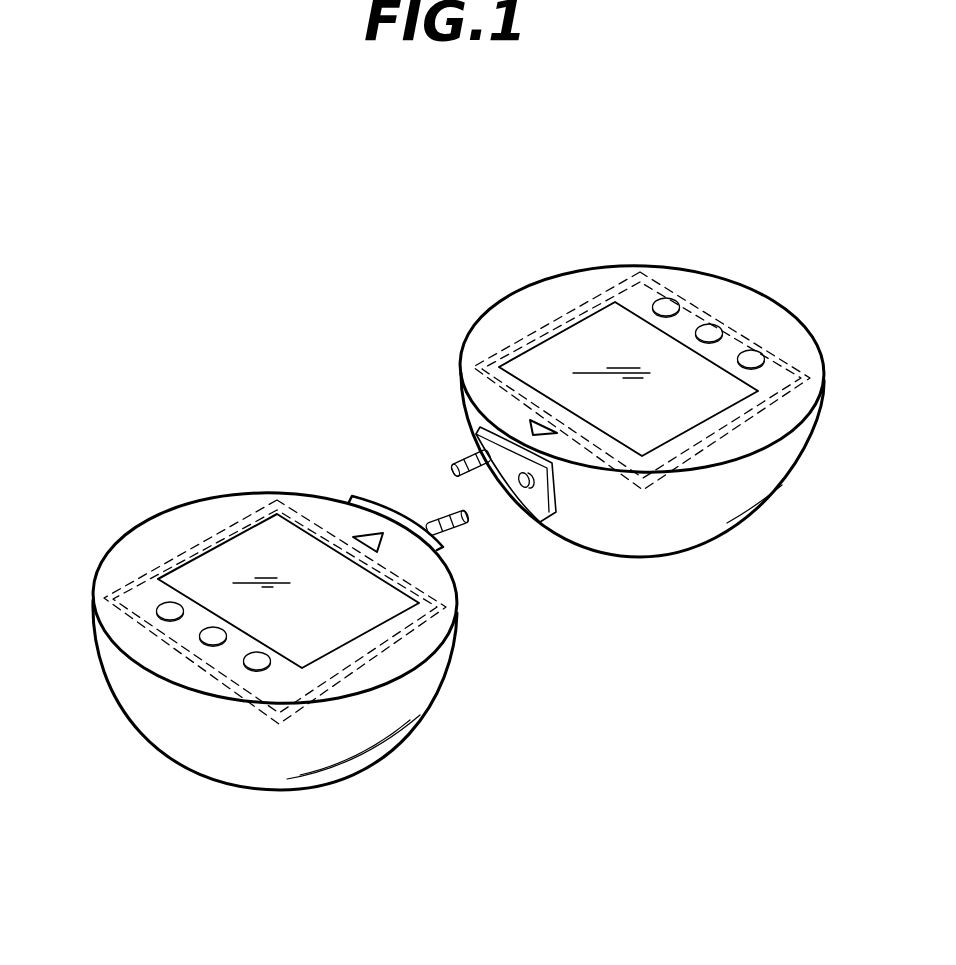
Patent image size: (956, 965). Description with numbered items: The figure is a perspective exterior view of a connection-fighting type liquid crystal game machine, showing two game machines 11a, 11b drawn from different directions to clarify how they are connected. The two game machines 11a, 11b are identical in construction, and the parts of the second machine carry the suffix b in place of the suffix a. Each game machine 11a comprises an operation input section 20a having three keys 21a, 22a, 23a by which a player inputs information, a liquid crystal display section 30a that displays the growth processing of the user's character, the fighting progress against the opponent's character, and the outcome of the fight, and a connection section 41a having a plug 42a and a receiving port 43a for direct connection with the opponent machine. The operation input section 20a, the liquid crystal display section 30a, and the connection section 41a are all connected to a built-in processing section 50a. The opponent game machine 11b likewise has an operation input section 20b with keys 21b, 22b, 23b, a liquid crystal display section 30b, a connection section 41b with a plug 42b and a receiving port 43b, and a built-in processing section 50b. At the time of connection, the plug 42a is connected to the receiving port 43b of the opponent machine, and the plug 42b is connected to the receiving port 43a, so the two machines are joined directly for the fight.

The game machine 11a is at (243, 453).
The game machine 11b is at (498, 285).
The operation input section 20a is at (170, 857).
The operation input section 20b is at (807, 253).
The key 21a is at (163, 619).
The key 21b is at (755, 353).
The key 22a is at (200, 646).
The key 22b is at (713, 327).
The key 23a is at (244, 671).
The key 23b is at (670, 300).
The liquid crystal display section 30a is at (207, 563).
The liquid crystal display section 30b is at (605, 315).
The connection section 41a is at (350, 473).
The connection section 41b is at (558, 543).
The plug 42a is at (467, 527).
The plug 42b is at (473, 457).
The receiving port 43a is at (393, 513).
The receiving port 43b is at (553, 493).
The processing section 50a is at (367, 690).
The processing section 50b is at (690, 457).